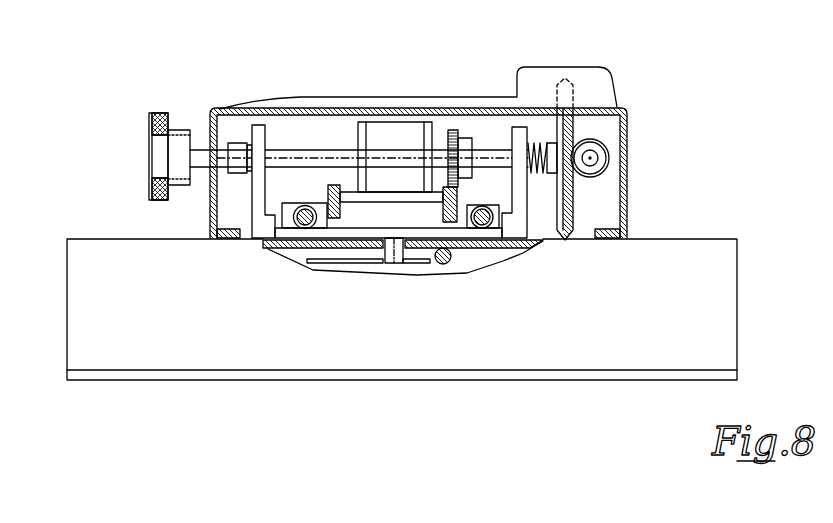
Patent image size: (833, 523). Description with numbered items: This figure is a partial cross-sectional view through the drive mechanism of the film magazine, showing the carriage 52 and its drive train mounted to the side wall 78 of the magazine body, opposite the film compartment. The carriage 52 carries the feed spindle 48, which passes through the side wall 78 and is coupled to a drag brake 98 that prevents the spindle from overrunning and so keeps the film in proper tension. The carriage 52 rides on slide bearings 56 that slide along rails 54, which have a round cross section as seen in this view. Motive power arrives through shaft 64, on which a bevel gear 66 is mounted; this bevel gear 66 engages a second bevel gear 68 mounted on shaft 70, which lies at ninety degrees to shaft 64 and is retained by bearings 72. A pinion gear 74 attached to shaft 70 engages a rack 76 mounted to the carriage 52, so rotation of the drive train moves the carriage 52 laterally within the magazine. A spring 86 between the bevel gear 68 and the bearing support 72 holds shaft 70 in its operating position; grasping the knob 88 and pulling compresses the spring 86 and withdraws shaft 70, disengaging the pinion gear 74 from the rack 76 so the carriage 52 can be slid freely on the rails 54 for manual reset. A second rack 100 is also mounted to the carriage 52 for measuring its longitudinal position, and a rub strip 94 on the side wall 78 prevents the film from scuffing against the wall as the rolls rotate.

The feed spindle 48 is at (388, 258).
The carriage 52 is at (366, 228).
The rails 54 is at (300, 222).
The slide bearings 56 is at (288, 208).
The shaft 64 is at (592, 160).
The bevel gear 66 is at (608, 147).
The bevel gear 68 is at (573, 213).
The shaft 70 is at (302, 157).
The bearings 72 is at (257, 127).
The pinion gear 74 is at (455, 132).
The rack 76 is at (457, 200).
The side wall 78 is at (307, 248).
The spring 86 is at (540, 147).
The knob 88 is at (167, 132).
The rub strip 94 is at (443, 265).
The drag brake 98 is at (393, 130).
The rack 100 is at (341, 190).